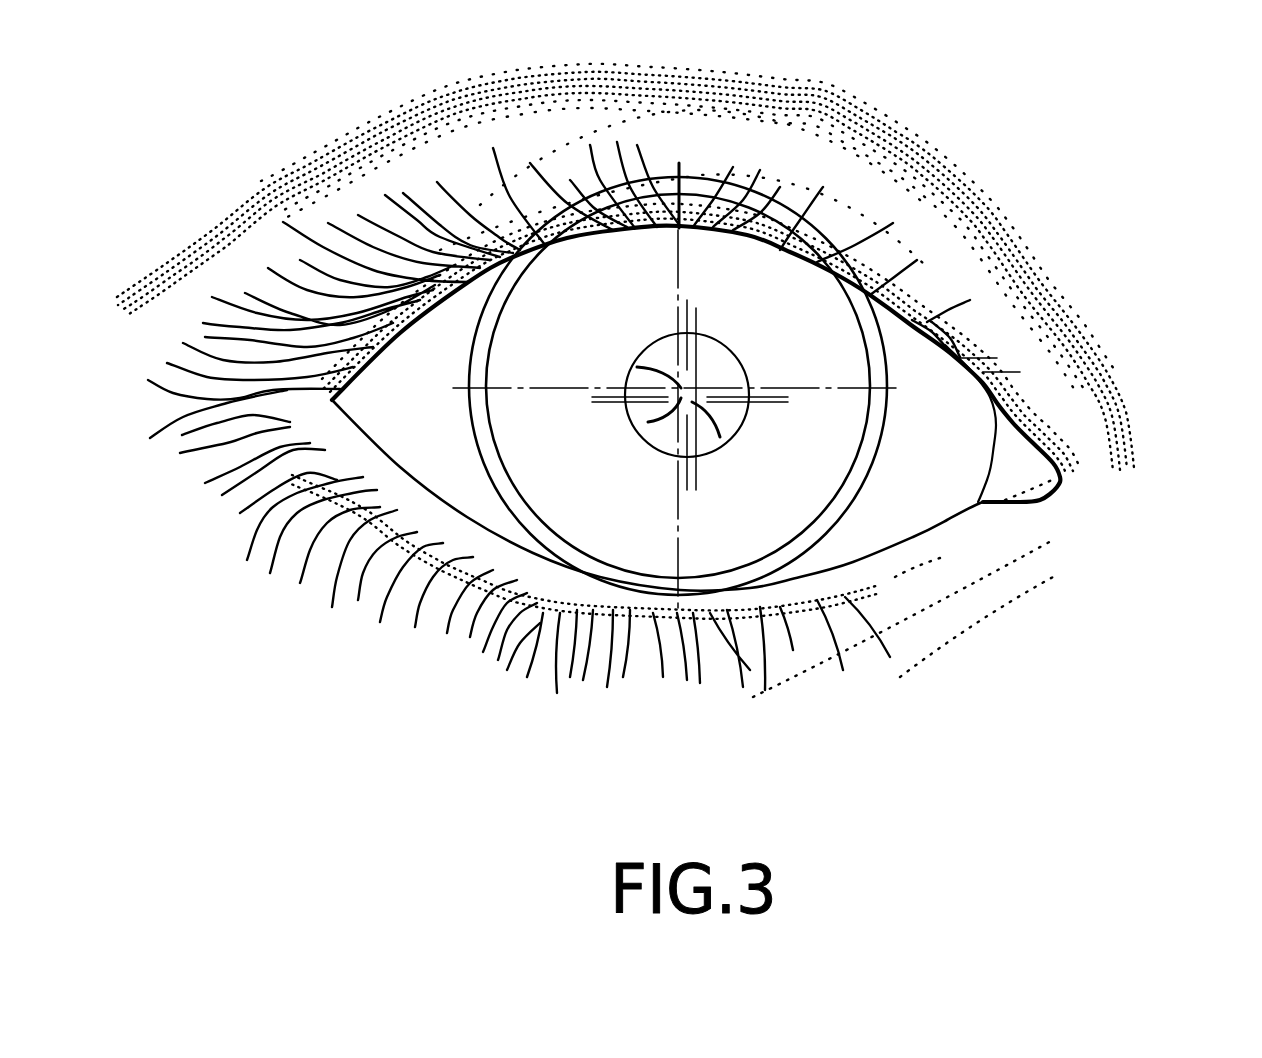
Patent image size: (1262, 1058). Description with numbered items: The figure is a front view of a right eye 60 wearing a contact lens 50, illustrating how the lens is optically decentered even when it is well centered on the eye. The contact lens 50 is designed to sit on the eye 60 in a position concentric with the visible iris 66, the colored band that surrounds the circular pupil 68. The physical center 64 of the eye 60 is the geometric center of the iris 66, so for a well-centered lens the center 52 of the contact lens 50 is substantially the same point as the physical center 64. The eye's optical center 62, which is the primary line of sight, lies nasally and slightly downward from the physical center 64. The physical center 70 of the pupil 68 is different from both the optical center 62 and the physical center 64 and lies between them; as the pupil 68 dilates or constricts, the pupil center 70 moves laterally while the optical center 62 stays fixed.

The eye 60 is at (1058, 250).
The contact lens 50 is at (886, 330).
The visible iris 66 is at (573, 567).
The pupil 68 is at (747, 337).
The physical center of the eye 64 is at (609, 329).
The center of the contact lens 52 is at (637, 367).
The physical center of the pupil 70 is at (648, 422).
The optical center 62 is at (720, 437).